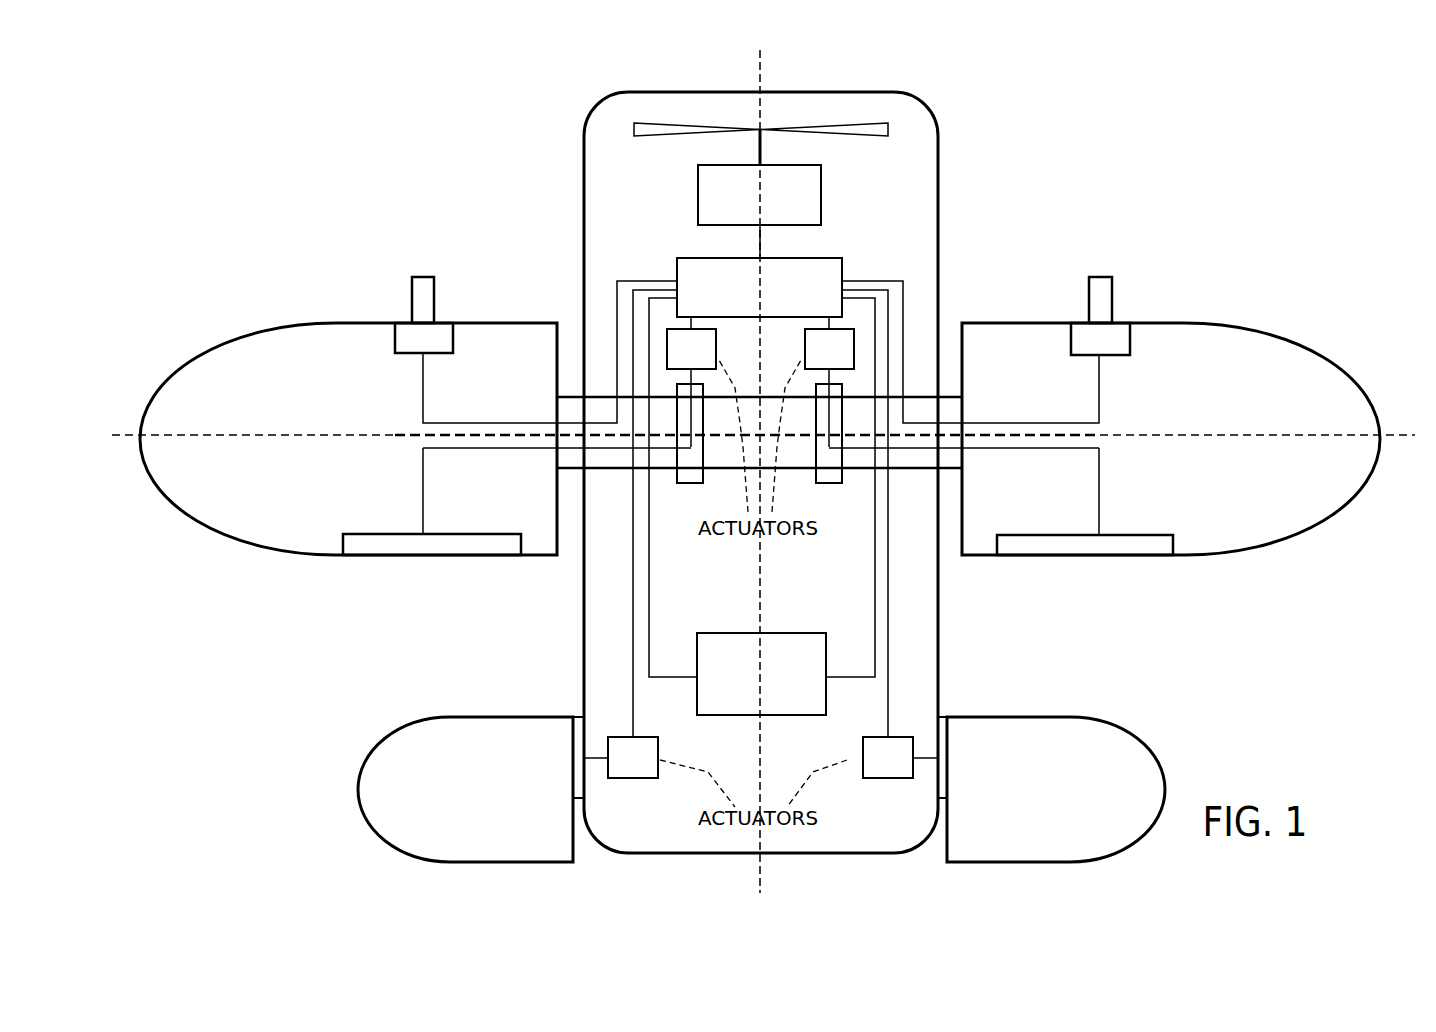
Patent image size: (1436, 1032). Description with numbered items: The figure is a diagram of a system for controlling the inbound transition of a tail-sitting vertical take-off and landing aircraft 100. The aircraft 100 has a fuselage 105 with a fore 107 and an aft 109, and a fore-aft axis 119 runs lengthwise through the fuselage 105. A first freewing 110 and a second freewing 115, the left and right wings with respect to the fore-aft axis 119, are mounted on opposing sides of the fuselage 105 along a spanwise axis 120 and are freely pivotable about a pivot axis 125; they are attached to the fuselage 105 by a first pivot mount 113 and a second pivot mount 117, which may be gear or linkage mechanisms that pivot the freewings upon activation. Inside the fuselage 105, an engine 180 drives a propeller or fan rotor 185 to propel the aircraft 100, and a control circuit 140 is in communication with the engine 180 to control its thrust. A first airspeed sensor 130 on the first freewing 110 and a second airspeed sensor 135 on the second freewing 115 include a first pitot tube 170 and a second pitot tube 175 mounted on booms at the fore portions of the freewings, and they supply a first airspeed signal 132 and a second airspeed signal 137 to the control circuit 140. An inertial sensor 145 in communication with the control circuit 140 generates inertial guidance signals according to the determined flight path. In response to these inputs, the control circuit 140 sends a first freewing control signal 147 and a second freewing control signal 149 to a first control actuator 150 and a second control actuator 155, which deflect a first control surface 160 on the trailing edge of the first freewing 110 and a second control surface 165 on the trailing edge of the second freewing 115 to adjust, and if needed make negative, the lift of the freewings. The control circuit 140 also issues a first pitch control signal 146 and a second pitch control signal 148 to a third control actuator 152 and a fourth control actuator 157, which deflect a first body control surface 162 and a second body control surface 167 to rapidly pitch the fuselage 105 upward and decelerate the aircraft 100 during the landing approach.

The tail-sitting VTOL aircraft 100 is at (316, 122).
The fuselage 105 is at (937, 177).
The fore 107 is at (875, 70).
The aft 109 is at (873, 878).
The first freewing 110 is at (236, 333).
The first pivot mount 113 is at (688, 486).
The second freewing 115 is at (1277, 332).
The second pivot mount 117 is at (828, 486).
The fore-aft axis 119 is at (752, 877).
The spanwise axis 120 is at (127, 437).
The pivot axis 125 is at (402, 437).
The first airspeed sensor 130 is at (390, 340).
The first airspeed signal 132 is at (550, 328).
The second airspeed sensor 135 is at (1133, 347).
The second airspeed signal 137 is at (970, 326).
The control circuit 140 is at (830, 255).
The inertial sensor 145 is at (780, 633).
The first pitch control signal 146 is at (632, 645).
The first freewing control signal 147 is at (603, 479).
The second pitch control signal 148 is at (888, 645).
The second freewing control signal 149 is at (919, 478).
The first control actuator 150 is at (691, 388).
The third control actuator 152 is at (621, 757).
The second control actuator 155 is at (829, 388).
The fourth control actuator 157 is at (900, 757).
The first control surface 160 is at (422, 545).
The first body control surface 162 is at (367, 757).
The second control surface 165 is at (1125, 545).
The second body control surface 167 is at (1147, 742).
The first pitot tube 170 is at (407, 278).
The second pitot tube 175 is at (1117, 273).
The engine 180 is at (823, 185).
The propeller or fan rotor 185 is at (678, 139).